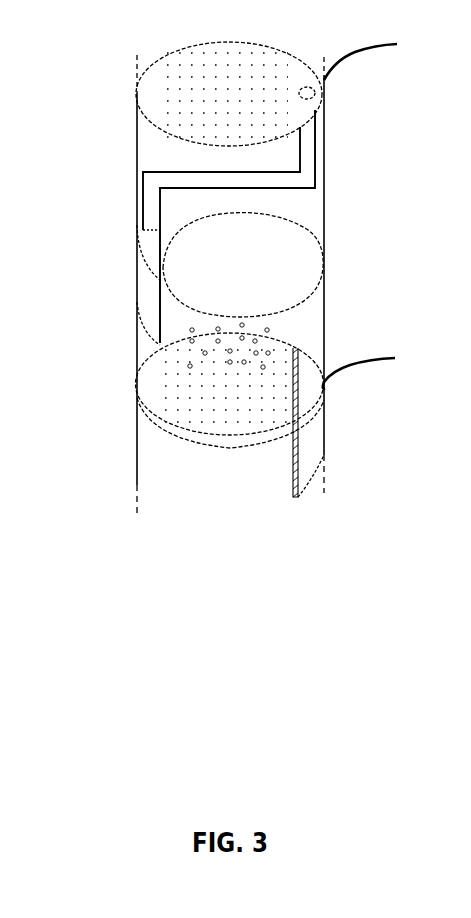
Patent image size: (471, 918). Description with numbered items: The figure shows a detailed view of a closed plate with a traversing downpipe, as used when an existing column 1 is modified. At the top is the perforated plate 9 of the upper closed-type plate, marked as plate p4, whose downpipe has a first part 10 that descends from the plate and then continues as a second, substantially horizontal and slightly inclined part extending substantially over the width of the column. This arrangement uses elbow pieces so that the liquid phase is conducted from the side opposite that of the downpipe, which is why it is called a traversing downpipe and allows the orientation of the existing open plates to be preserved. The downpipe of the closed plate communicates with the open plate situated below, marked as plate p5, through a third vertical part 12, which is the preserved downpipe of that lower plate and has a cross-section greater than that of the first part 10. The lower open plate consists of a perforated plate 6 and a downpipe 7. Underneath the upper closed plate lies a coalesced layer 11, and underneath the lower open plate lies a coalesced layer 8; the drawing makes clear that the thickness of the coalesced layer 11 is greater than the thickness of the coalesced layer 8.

The housing 1 is at (137, 155).
The perforated plate 6 is at (137, 377).
The downpipe 7 is at (318, 425).
The coalesced layer 8 is at (140, 445).
The perforated plate 9 is at (160, 82).
The downpipe 10 is at (307, 148).
The coalesced layer 11 is at (305, 285).
The third vertical part 12 is at (150, 309).
The position p4 is at (380, 56).
The position p5 is at (380, 367).